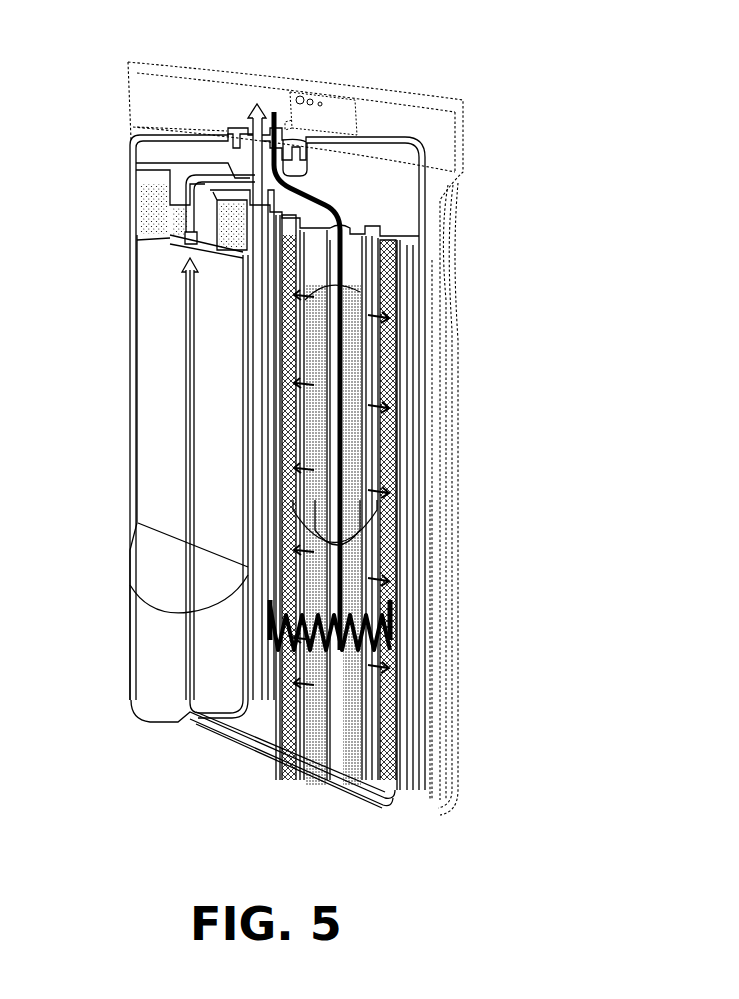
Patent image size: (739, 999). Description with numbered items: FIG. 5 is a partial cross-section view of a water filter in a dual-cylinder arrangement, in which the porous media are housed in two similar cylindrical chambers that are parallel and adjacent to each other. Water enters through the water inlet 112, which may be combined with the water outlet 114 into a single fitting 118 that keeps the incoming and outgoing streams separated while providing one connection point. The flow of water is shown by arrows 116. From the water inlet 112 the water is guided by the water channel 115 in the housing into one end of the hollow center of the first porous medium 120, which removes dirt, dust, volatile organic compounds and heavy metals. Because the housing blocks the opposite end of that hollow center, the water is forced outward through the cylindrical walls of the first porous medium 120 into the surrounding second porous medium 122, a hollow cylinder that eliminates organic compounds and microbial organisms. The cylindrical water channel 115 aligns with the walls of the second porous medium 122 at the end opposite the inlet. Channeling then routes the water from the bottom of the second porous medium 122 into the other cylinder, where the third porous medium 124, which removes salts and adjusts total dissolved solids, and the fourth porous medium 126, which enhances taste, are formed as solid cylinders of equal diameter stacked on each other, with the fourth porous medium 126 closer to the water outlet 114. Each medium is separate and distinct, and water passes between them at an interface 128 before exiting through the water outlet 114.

The water inlet 112 is at (308, 142).
The water outlet 114 is at (238, 132).
The water channel 115 is at (377, 797).
The arrows 116 is at (183, 320).
The single fitting 118 is at (293, 133).
The first porous medium 120 is at (367, 448).
The second porous medium 122 is at (413, 353).
The third porous medium 124 is at (160, 438).
The fourth porous medium 126 is at (150, 210).
The interface 128 is at (182, 239).